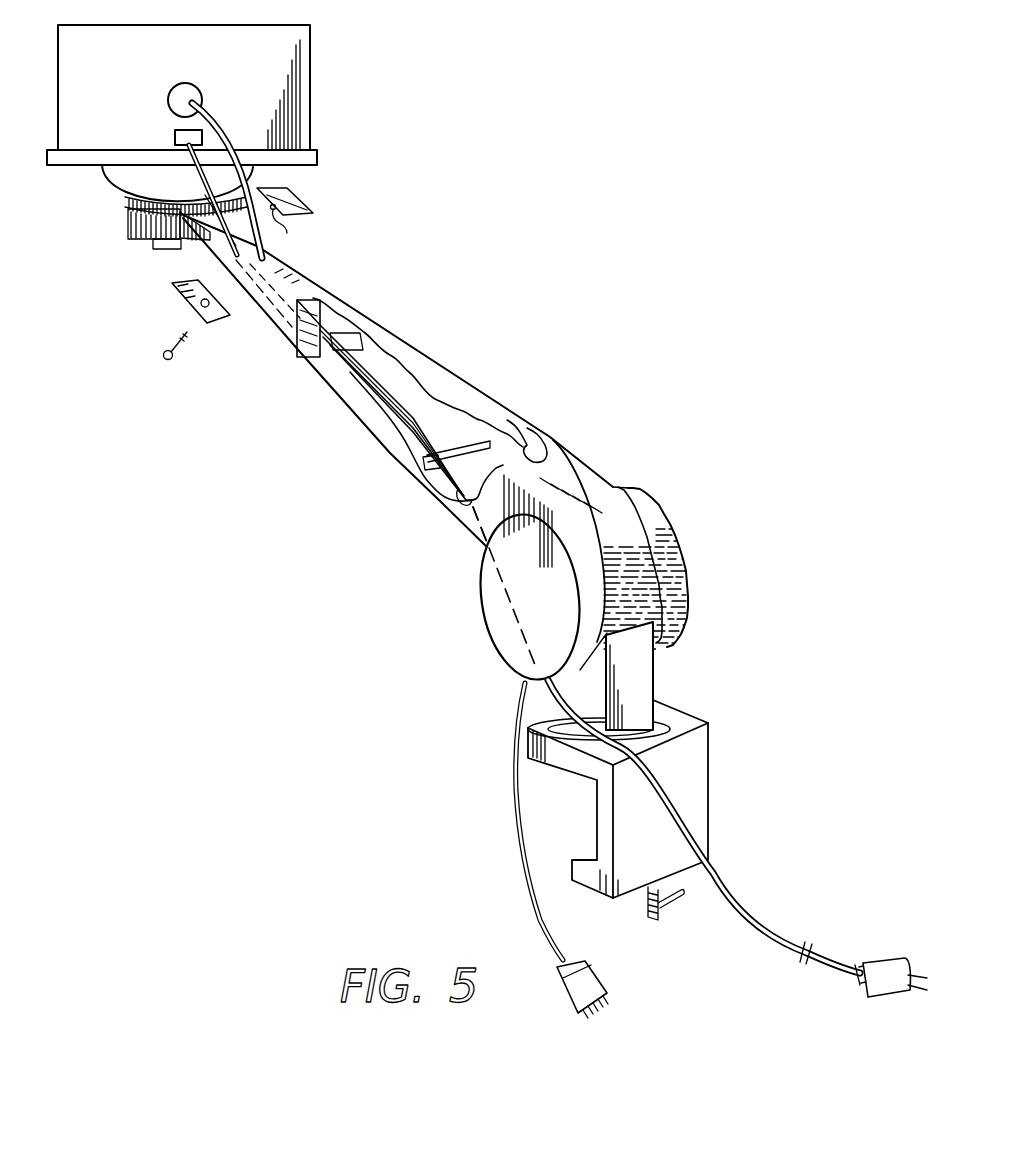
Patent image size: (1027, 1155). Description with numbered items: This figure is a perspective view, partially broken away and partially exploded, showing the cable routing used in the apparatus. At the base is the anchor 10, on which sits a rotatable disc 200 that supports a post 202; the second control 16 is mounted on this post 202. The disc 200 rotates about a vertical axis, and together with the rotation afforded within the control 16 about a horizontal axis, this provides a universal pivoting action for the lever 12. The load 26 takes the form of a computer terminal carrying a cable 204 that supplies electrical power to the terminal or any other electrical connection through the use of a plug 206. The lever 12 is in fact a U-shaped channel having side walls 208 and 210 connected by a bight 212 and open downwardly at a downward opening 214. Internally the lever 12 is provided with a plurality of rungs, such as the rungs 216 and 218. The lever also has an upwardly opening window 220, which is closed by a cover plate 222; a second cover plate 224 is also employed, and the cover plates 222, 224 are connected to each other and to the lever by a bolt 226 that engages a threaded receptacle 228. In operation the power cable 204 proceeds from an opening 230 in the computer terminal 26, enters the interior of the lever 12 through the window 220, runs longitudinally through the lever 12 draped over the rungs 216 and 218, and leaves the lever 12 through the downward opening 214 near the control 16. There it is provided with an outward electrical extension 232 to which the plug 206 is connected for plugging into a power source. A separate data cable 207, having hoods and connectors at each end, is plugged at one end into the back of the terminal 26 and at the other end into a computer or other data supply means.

The anchor 10 is at (713, 783).
The lever 12 is at (520, 415).
The second control 16 is at (693, 530).
The load 26 is at (312, 88).
The rotatable disc 200 is at (660, 720).
The post 202 is at (640, 677).
The cable 204 is at (175, 135).
The plug 206 is at (887, 997).
The data-cable 207 is at (520, 845).
The side wall 208 is at (537, 437).
The side wall 210 is at (350, 393).
The bight 212 is at (430, 377).
The downward opening 214 is at (463, 530).
The rung 216 is at (342, 333).
The rung 218 is at (473, 440).
The window 220 is at (210, 230).
The cover plate 222 is at (295, 207).
The second cover plate 224 is at (218, 325).
The bolt 226 is at (168, 345).
The threaded receptacle 228 is at (315, 230).
The opening 230 is at (169, 83).
The outward electrical extension 232 is at (747, 920).